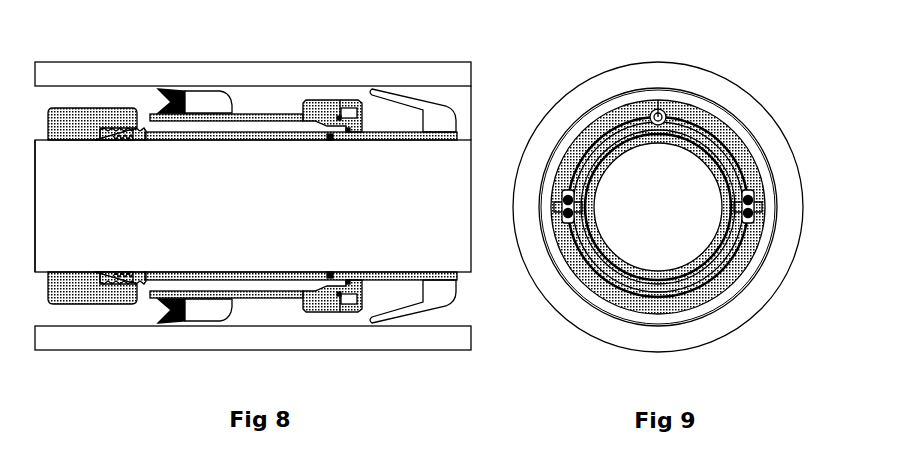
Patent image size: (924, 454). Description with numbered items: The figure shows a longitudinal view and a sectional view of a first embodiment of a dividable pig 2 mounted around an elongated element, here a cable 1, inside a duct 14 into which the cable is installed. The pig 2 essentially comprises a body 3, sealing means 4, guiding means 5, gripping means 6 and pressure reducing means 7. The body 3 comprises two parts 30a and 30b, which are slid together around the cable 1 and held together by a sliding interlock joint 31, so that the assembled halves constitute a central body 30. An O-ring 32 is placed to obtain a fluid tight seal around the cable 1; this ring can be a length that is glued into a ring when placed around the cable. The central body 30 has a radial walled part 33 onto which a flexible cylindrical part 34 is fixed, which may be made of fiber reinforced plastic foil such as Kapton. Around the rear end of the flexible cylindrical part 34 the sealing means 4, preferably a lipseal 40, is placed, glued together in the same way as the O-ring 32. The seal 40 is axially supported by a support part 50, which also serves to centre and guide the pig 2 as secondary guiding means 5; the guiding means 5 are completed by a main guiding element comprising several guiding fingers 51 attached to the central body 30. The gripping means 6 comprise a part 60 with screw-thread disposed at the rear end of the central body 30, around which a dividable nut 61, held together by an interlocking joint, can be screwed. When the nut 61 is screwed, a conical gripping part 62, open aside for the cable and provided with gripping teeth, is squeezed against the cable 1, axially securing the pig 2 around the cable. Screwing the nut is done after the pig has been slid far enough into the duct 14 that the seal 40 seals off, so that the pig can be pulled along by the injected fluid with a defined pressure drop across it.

In FIG. 8, the cable 1 is at (372, 216).
In FIG. 9, the cable 1 is at (652, 215).
In FIG. 8, the dividable pig 2 is at (470, 127).
In FIG. 9, the dividable pig 2 is at (753, 157).
In FIG. 8, the body 3 is at (254, 216).
In FIG. 8, the sealing means 4 is at (172, 88).
In FIG. 8, the guiding means 5 is at (233, 92).
In FIG. 8, the gripping means 6 is at (97, 148).
In FIG. 8, the pressure reducing means 7 is at (365, 112).
In FIG. 8, the duct 14 is at (72, 75).
In FIG. 8, the central body 30 is at (274, 195).
In FIG. 9, the first body part 30a is at (732, 133).
In FIG. 9, the second body part 30b is at (733, 283).
In FIG. 9, the sliding interlock joint 31 is at (593, 203).
In FIG. 8, the O-ring 32 is at (329, 143).
In FIG. 8, the radial walled part 33 is at (366, 297).
In FIG. 8, the flexible cylindrical part 34 is at (252, 117).
In FIG. 8, the lipseal 40 is at (163, 326).
In FIG. 8, the support part 50 is at (213, 97).
In FIG. 8, the guiding fingers 51 is at (443, 292).
In FIG. 8, the screw-threaded part 60 is at (130, 141).
In FIG. 8, the dividable nut 61 is at (57, 110).
In FIG. 8, the conical gripping part 62 is at (84, 143).